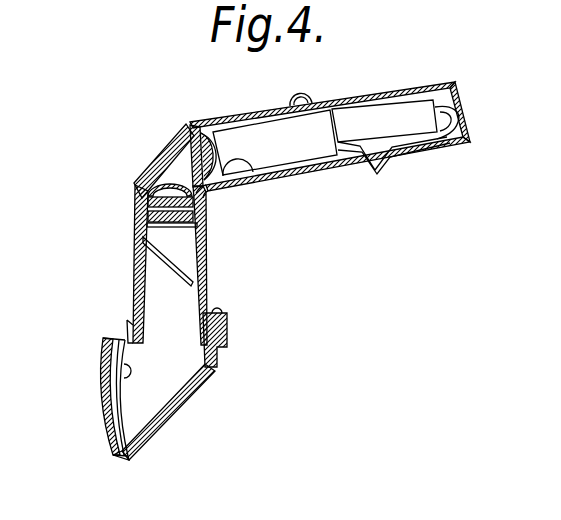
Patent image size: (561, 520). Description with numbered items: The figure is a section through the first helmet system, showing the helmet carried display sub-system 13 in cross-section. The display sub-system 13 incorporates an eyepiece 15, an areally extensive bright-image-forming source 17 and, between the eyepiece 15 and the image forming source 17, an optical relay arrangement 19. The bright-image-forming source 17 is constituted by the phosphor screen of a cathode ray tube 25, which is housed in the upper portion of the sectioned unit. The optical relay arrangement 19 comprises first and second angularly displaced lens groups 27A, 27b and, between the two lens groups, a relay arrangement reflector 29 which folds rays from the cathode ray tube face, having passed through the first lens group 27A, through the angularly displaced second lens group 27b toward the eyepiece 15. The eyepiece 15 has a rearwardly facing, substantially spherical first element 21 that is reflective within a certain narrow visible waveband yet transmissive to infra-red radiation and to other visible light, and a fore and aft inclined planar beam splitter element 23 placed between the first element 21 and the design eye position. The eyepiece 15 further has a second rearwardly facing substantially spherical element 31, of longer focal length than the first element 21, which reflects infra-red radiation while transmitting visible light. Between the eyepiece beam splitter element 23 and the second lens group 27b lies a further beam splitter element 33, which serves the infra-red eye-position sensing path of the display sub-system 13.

The helmet carried display sub-system 13 is at (141, 476).
The eyepiece 15 is at (218, 378).
The areally extensive bright-image-forming source 17 is at (192, 145).
The optical relay arrangement 19 is at (172, 120).
The first element 21 is at (103, 354).
The beam splitter element 23 is at (167, 417).
The cathode ray tube 25 is at (255, 138).
The first lens group 27A is at (251, 178).
The second lens group 27b is at (136, 223).
The relay arrangement reflector 29 is at (143, 143).
The second element 31 is at (102, 405).
The further beam splitter element 33 is at (197, 248).